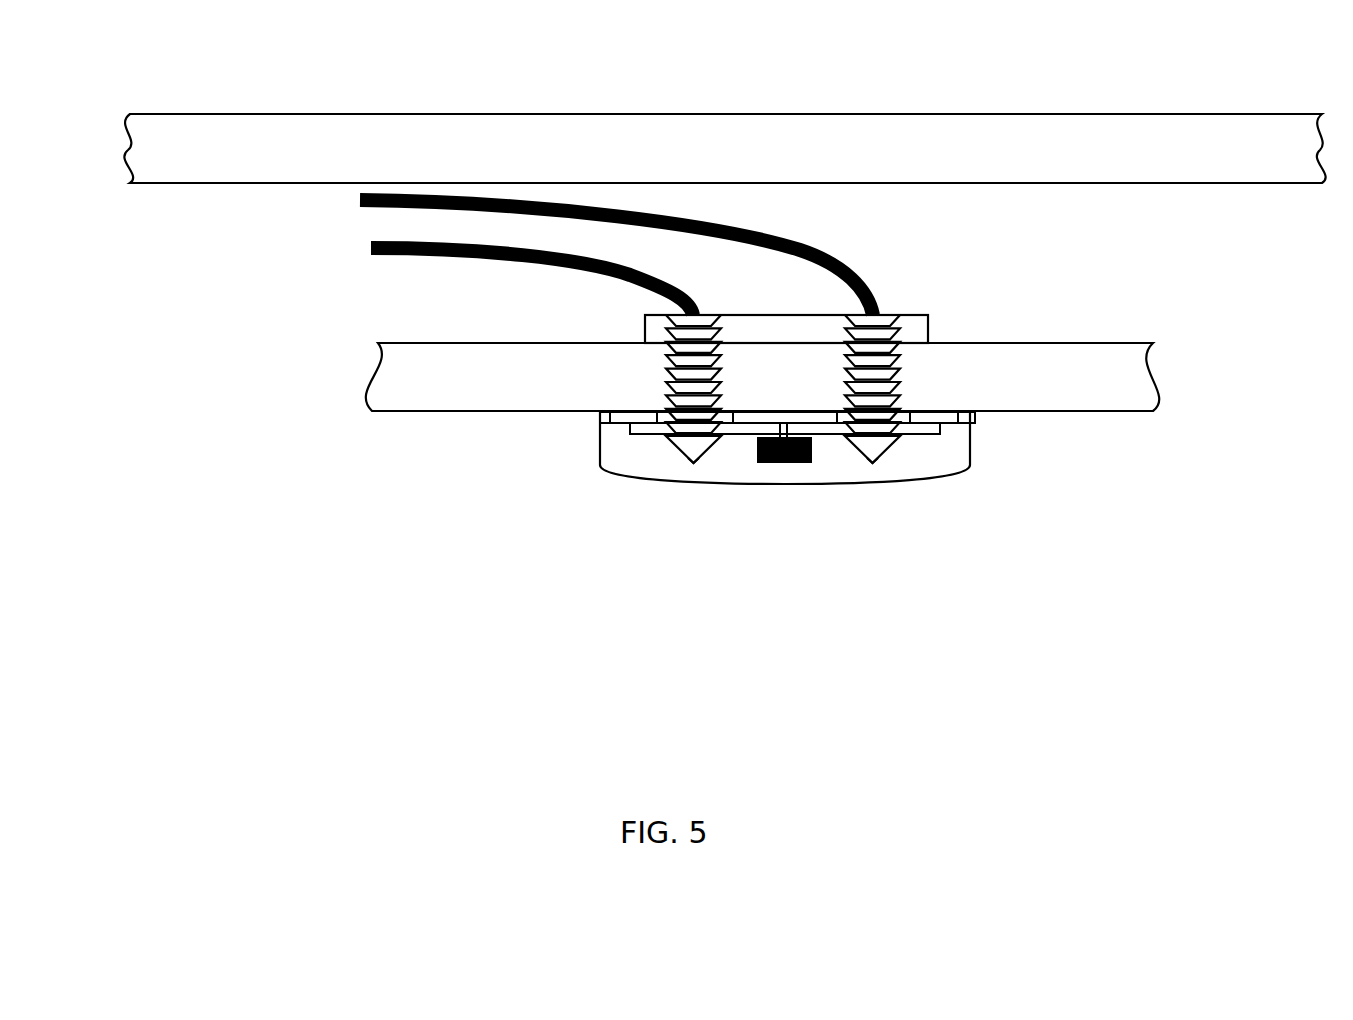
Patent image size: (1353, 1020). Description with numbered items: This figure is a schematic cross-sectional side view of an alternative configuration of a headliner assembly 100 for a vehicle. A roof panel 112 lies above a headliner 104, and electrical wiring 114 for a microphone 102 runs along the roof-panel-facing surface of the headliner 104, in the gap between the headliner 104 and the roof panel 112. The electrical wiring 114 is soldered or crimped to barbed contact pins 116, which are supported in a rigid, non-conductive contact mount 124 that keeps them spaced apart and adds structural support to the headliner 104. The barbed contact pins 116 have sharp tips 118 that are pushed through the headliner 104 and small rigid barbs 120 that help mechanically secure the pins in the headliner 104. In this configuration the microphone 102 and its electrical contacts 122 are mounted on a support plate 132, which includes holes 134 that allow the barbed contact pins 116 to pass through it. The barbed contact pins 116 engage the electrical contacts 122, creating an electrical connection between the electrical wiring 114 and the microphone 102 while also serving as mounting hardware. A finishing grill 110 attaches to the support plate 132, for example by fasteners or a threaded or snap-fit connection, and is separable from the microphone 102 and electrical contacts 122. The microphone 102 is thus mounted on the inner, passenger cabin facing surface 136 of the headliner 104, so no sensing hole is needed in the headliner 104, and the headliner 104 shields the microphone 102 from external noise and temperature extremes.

The headliner assembly 100 is at (327, 277).
The microphone 102 is at (785, 463).
The headliner 104 is at (472, 398).
The finishing grill 110 is at (956, 475).
The roof panel 112 is at (572, 114).
The electrical wiring 114 is at (815, 248).
The barbed contact pins 116 is at (670, 460).
The sharp tips 118 is at (694, 463).
The barbs 120 is at (666, 370).
The electrical contacts 122 is at (640, 437).
The contact mount 124 is at (928, 315).
The support plate 132 is at (600, 421).
The holes 134 is at (600, 418).
The passenger cabin facing surface 136 is at (400, 420).